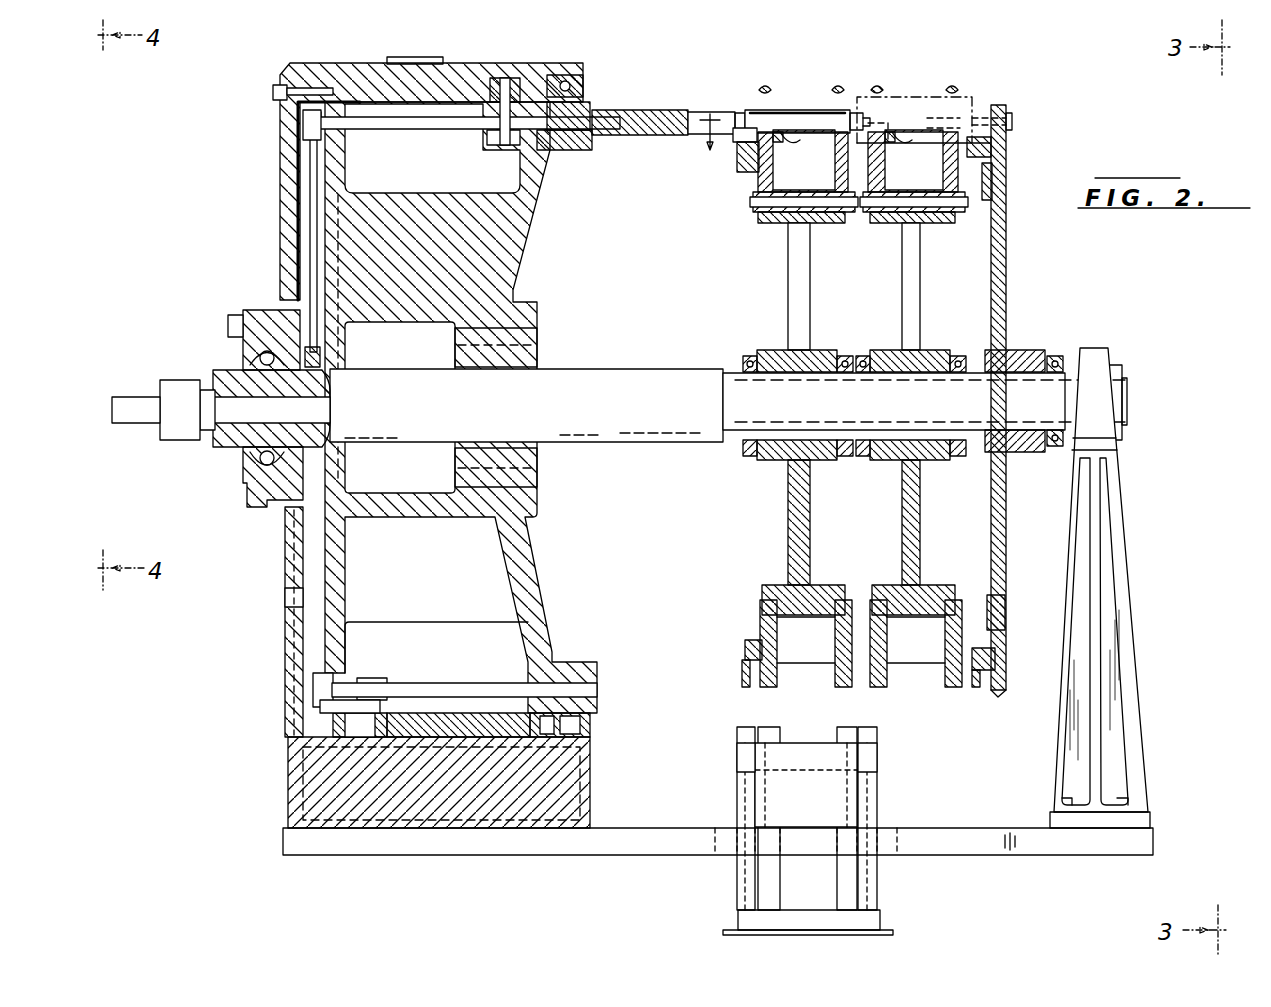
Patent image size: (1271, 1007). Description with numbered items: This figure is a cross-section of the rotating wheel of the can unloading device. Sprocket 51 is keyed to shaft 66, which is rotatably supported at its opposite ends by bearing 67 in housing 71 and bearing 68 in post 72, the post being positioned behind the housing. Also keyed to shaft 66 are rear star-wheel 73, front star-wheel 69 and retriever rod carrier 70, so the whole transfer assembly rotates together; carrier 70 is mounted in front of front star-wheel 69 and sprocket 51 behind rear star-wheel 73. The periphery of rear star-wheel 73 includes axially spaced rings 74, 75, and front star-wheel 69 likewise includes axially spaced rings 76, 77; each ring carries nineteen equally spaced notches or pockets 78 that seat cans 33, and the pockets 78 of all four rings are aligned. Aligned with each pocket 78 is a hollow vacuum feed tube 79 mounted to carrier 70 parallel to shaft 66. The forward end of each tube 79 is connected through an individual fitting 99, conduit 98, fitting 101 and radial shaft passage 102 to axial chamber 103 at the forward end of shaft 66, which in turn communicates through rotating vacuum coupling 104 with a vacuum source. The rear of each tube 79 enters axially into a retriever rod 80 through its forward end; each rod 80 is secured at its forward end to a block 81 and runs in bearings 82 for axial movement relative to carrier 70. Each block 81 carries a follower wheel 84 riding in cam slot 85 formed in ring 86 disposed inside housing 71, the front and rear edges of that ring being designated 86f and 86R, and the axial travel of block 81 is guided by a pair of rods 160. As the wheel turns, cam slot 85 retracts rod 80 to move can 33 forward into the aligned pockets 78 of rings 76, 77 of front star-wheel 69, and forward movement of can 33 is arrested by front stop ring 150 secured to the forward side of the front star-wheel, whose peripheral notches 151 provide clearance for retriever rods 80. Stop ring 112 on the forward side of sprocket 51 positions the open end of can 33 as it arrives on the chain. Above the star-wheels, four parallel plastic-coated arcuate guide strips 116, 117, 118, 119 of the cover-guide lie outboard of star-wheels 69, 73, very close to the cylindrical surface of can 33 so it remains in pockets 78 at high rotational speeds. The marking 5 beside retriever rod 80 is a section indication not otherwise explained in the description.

The ring 86 is at (360, 104).
The follower wheel 84 is at (507, 78).
The cam slot 85 is at (525, 66).
The retriever rod 80 is at (717, 90).
The guide strip 119 is at (763, 87).
The front stop ring 150 is at (748, 142).
The guide strip 118 is at (838, 87).
The guide strip 117 is at (877, 87).
The can 33 is at (928, 80).
The guide strip 116 is at (951, 87).
The fitting 99 is at (310, 153).
The vacuum feed tube 79 is at (390, 130).
The block 81 is at (502, 140).
The bearings 82 is at (567, 150).
The section line 5 is at (710, 145).
The pocket 78 is at (778, 136).
The peripheral notch 151 is at (737, 142).
The ring 76 is at (833, 170).
The ring 77 is at (753, 190).
The ring 75 is at (887, 187).
The ring 74 is at (965, 177).
The conduit 98 is at (310, 243).
The rear star-wheel 73 is at (900, 283).
The sprocket 51 is at (1013, 268).
The fitting 101 is at (320, 357).
The radial shaft passage 102 is at (330, 385).
The axial chamber 103 is at (303, 410).
The rotating vacuum coupling 104 is at (188, 443).
The bearing 67 is at (243, 470).
The shaft 66 is at (672, 416).
The bearing 68 is at (1103, 440).
The front star-wheel 69 is at (792, 527).
The housing 71 is at (292, 552).
The retriever rod carrier 70 is at (537, 597).
The post 72 is at (1134, 648).
The guide rod 160 is at (483, 682).
The rear edge of ring 86R is at (538, 712).
The front edge of ring 86f is at (338, 713).
The stop ring 112 is at (973, 687).